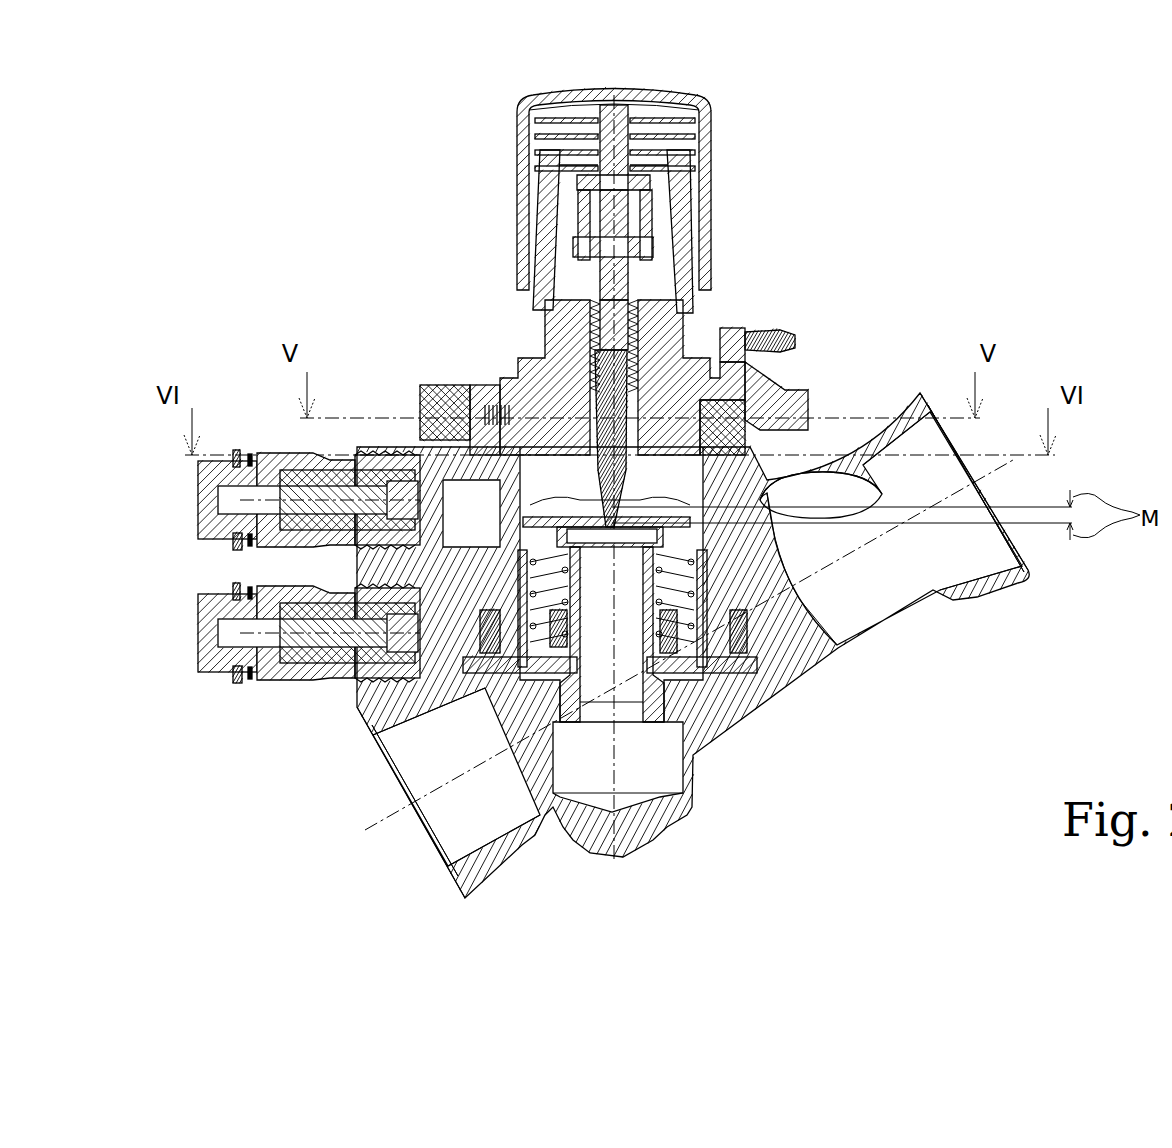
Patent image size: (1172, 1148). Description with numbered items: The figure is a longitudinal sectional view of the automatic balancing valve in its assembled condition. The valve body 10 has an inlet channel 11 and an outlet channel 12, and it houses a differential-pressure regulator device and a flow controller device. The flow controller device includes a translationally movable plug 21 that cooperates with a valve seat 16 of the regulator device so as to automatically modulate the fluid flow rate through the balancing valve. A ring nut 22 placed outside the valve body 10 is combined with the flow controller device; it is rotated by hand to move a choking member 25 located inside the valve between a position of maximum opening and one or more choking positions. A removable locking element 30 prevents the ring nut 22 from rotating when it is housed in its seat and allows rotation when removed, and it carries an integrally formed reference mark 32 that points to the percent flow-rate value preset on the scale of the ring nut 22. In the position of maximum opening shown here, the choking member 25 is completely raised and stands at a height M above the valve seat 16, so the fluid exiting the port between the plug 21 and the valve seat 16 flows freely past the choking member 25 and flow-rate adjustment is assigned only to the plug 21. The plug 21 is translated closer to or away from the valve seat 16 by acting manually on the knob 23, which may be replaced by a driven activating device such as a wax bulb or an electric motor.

The valve body 10 is at (778, 688).
The inlet channel 11 is at (415, 767).
The outlet channel 12 is at (957, 550).
The valve seat 16 is at (553, 527).
The plug 21 is at (775, 535).
The ring nut 22 is at (808, 390).
The knob 23 is at (698, 190).
The choking member 25 is at (745, 507).
The locking element 30 is at (488, 350).
The reference mark 32 is at (783, 333).